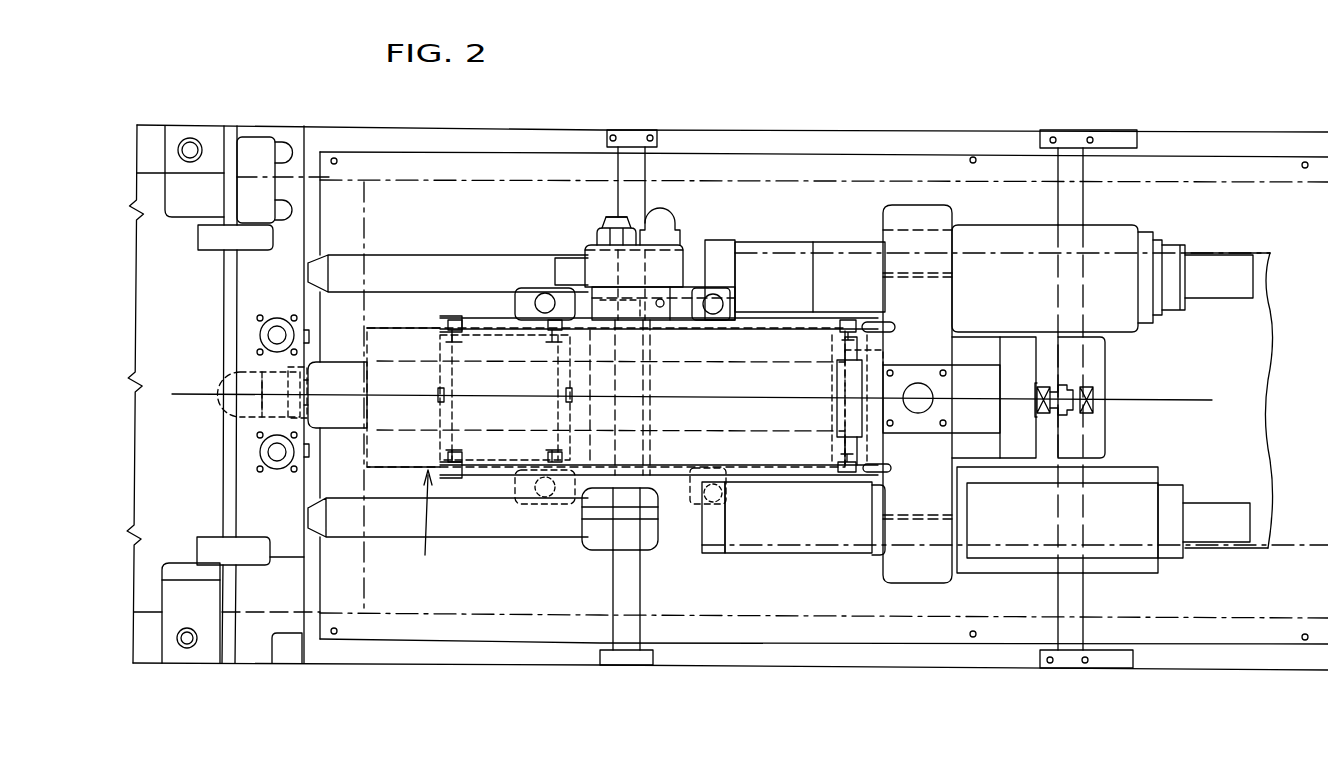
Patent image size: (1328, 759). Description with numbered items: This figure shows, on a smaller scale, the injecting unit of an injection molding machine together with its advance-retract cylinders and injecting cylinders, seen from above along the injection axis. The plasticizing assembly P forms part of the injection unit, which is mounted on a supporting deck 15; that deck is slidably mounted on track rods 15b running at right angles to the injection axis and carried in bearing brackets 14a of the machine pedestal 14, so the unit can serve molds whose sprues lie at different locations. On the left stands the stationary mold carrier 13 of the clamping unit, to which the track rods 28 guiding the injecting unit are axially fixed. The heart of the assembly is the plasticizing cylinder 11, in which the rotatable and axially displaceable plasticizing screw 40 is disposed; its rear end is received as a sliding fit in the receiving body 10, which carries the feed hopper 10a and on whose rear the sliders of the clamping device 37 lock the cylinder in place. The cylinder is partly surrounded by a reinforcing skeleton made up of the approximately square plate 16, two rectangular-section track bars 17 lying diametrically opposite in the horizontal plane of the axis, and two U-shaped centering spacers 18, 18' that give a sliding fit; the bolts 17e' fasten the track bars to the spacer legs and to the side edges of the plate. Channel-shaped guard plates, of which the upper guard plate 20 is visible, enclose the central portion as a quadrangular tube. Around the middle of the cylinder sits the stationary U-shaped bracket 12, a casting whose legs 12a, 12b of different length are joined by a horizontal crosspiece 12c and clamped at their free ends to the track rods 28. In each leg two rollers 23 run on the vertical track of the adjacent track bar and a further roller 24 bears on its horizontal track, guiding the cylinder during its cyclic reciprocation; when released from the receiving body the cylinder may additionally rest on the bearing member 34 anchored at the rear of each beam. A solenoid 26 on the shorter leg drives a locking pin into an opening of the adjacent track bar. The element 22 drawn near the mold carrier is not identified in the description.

The receiving body 10 is at (905, 295).
The feed hopper 10a is at (918, 405).
The plasticizing cylinder 11 is at (340, 380).
The U-shaped bracket 12 is at (595, 562).
The leg of the U-shaped bracket 12a is at (632, 528).
The shorter leg of the U-shaped bracket 12b is at (652, 287).
The horizontal crosspiece 12c is at (557, 255).
The mold carrier 13 is at (250, 374).
The machine pedestal 14 is at (455, 652).
The bearing brackets 14a is at (637, 138).
The supporting deck 15 is at (1240, 434).
The track rods 15b is at (633, 197).
The plate spacer 16 is at (838, 417).
The track bars 17 is at (790, 327).
The bolts 17e' is at (654, 406).
The centering spacer 18 is at (611, 395).
The centering spacer 18' is at (611, 416).
The upper guard plate 20 is at (398, 445).
The coupling 22 is at (255, 400).
The rollers 23 is at (535, 288).
The roller 24 is at (535, 338).
The solenoid 26 is at (598, 227).
The track rods 28 is at (394, 275).
The bearing member 34 is at (702, 330).
The clamping device 37 is at (1020, 360).
The plasticizing screw 40 is at (1100, 398).
The plasticizing assembly P is at (422, 526).